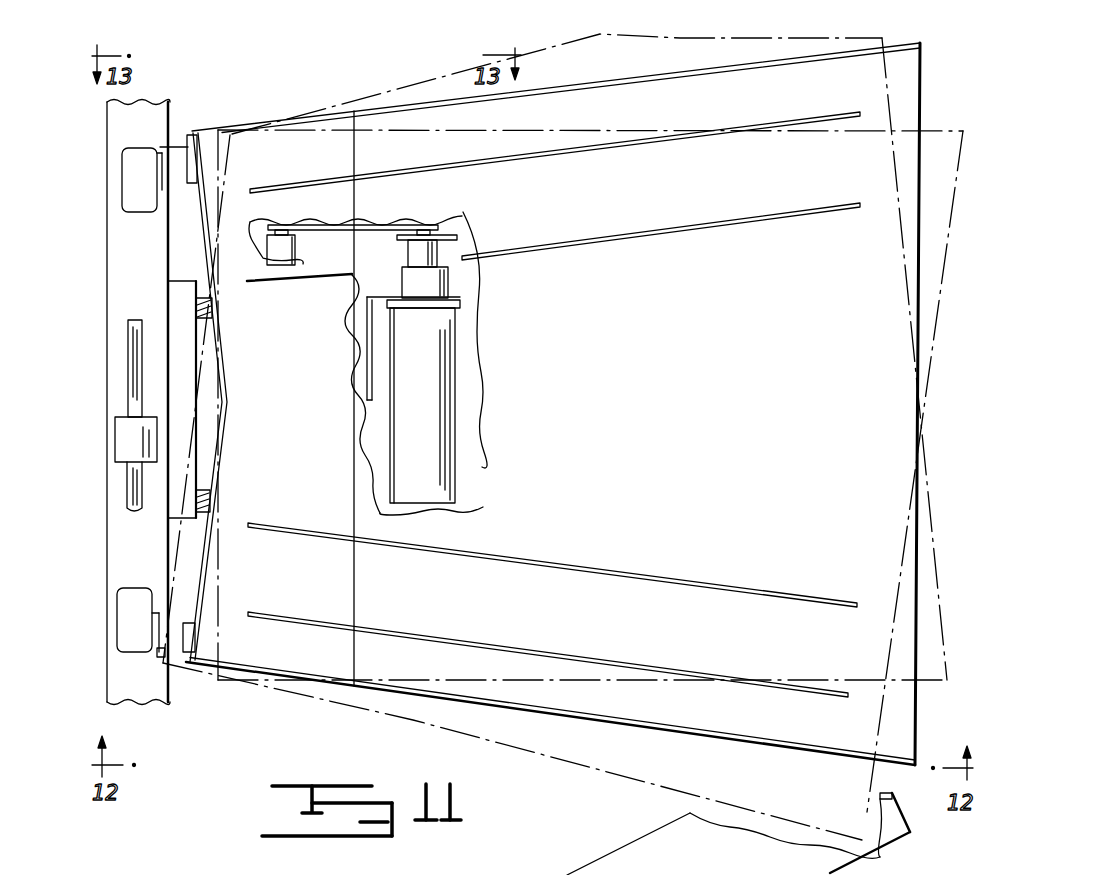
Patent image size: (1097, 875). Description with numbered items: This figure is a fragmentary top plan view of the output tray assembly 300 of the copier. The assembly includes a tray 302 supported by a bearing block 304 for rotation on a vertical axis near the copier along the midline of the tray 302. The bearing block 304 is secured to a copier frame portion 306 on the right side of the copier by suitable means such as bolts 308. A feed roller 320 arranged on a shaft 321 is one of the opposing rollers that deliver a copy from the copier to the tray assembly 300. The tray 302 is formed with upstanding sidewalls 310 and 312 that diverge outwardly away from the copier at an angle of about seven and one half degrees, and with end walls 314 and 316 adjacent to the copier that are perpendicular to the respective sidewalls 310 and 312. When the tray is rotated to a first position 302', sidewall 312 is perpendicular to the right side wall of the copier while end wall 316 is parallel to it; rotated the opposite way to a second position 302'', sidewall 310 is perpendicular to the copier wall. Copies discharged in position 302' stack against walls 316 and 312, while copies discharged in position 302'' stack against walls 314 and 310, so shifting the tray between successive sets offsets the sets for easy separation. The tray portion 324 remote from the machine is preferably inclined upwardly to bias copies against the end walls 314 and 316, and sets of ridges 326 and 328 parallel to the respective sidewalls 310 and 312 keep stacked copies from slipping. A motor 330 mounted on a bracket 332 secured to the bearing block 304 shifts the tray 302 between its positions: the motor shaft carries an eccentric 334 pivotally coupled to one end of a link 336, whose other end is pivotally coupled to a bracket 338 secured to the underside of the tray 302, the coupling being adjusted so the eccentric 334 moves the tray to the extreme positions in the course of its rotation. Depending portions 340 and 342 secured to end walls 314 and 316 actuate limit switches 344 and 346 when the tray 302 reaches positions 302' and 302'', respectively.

The output tray assembly 300 is at (553, 414).
The tray 302 is at (590, 371).
The first position 302' is at (563, 485).
The second position 302'' is at (589, 356).
The bearing block 304 is at (177, 522).
The copier frame portion 306 is at (170, 112).
The bolts 308 is at (199, 314).
The sidewall 310 is at (427, 699).
The sidewall 312 is at (602, 81).
The end wall 314 is at (202, 597).
The end wall 316 is at (207, 203).
The feed roller 320 is at (115, 461).
The shaft 321 is at (128, 337).
The tray portion 324 is at (690, 362).
The ridges 326 is at (600, 570).
The ridges 328 is at (668, 138).
The motor 330 is at (457, 410).
The bracket 332 is at (463, 296).
The eccentric 334 is at (452, 237).
The link 336 is at (413, 224).
The bracket 338 is at (297, 256).
The depending portion 340 is at (176, 660).
The depending portion 342 is at (181, 142).
The limit switch 344 is at (131, 588).
The limit switch 346 is at (143, 213).